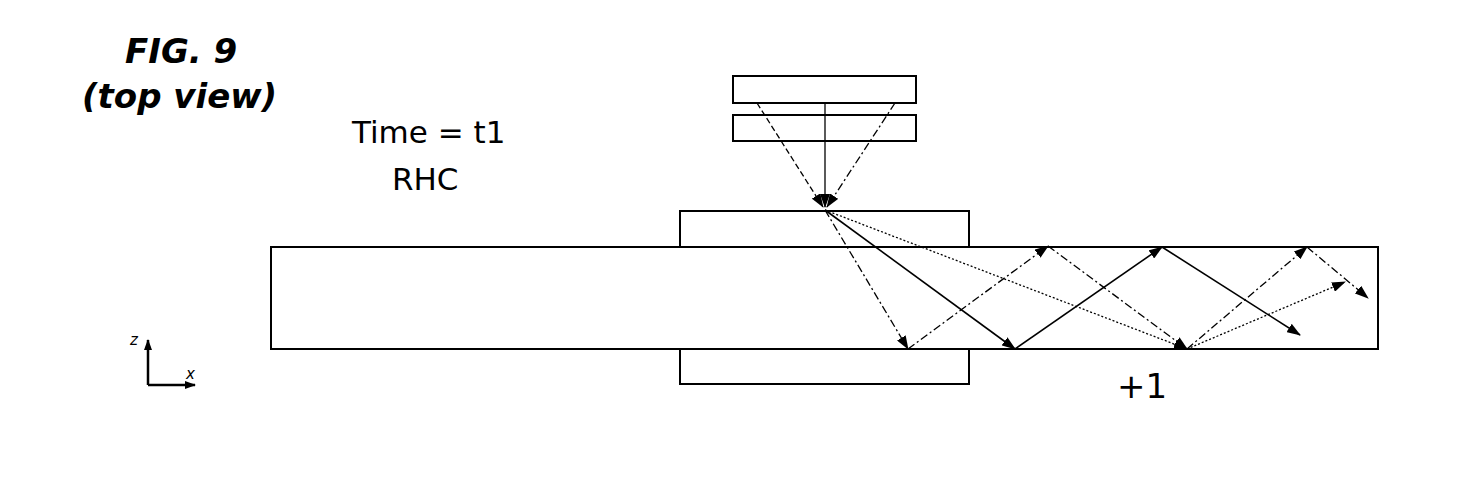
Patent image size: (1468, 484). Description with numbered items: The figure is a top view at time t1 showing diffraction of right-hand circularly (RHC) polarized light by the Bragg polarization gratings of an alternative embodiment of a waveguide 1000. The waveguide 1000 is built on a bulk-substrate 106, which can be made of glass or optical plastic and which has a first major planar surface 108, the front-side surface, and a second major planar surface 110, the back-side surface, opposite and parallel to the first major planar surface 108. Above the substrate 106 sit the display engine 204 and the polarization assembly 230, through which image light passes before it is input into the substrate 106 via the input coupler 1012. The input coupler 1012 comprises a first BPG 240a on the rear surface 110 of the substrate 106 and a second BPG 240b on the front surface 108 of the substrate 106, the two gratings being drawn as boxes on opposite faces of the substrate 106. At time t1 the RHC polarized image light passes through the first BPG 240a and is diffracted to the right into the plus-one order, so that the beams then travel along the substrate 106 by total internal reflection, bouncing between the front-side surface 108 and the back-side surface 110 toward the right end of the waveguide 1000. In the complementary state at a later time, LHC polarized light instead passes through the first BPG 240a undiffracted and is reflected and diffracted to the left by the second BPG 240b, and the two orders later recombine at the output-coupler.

The waveguide 1000 is at (228, 262).
The input coupler 1012 is at (660, 202).
The display engine 204 is at (916, 95).
The polarization assembly 230 is at (916, 128).
The first BPG 240a is at (969, 226).
The second BPG 240b is at (969, 378).
The bulk-substrate 106 is at (1378, 295).
The second major planar surface 110 is at (1330, 245).
The first major planar surface 108 is at (1327, 352).